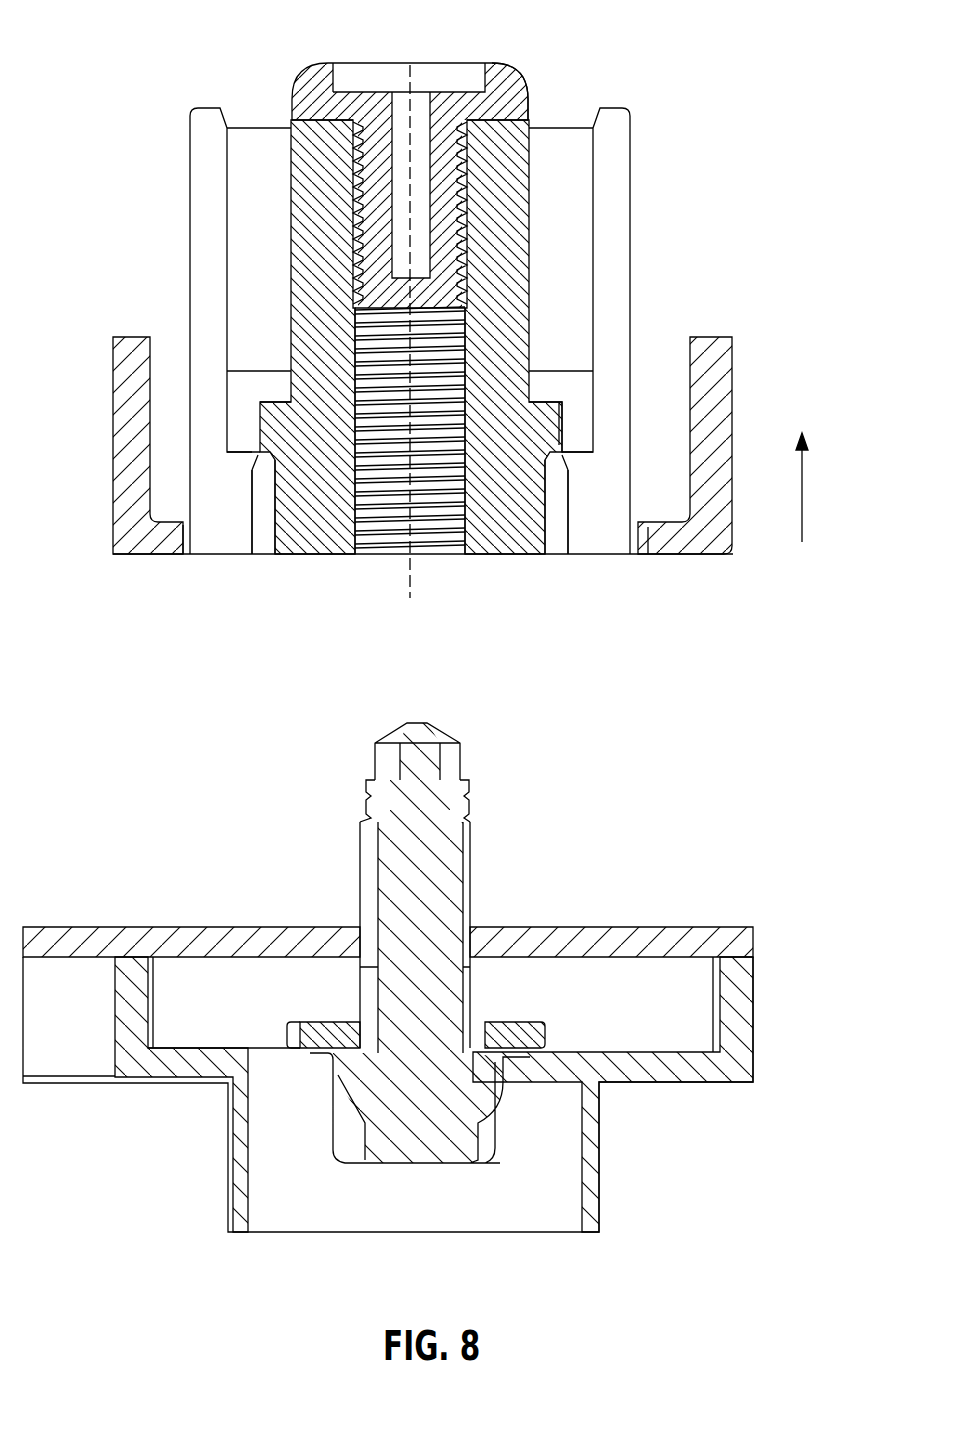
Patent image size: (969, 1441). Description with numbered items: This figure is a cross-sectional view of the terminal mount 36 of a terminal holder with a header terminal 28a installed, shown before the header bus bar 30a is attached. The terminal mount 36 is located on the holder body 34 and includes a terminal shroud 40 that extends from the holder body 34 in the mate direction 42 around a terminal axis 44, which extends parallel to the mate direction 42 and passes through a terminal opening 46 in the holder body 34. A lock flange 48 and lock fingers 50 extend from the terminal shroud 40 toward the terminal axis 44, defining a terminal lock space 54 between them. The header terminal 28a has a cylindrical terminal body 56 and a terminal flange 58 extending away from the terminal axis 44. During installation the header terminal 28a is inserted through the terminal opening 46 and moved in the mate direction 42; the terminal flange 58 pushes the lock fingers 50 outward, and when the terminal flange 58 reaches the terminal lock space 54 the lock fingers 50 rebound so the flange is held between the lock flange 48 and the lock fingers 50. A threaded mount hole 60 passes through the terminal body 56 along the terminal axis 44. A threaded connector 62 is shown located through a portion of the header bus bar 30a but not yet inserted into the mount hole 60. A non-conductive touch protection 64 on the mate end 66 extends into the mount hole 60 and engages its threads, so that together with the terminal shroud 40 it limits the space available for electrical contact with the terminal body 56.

The header terminal 28a is at (530, 237).
The header bus bar 30a is at (738, 1033).
The holder body 34 is at (723, 412).
The terminal mount 36 is at (632, 297).
The terminal shroud 40 is at (228, 160).
The mate direction 42 is at (805, 486).
The terminal axis 44 is at (410, 594).
The terminal opening 46 is at (255, 555).
The lock flange 48 is at (245, 370).
The lock fingers 50 is at (260, 435).
The terminal lock space 54 is at (539, 441).
The terminal body 56 is at (514, 299).
The terminal flange 58 is at (562, 437).
The mount hole 60 is at (350, 325).
The threaded connector 62 is at (405, 1165).
The touch protection 64 is at (510, 70).
The mate end 66 is at (510, 117).